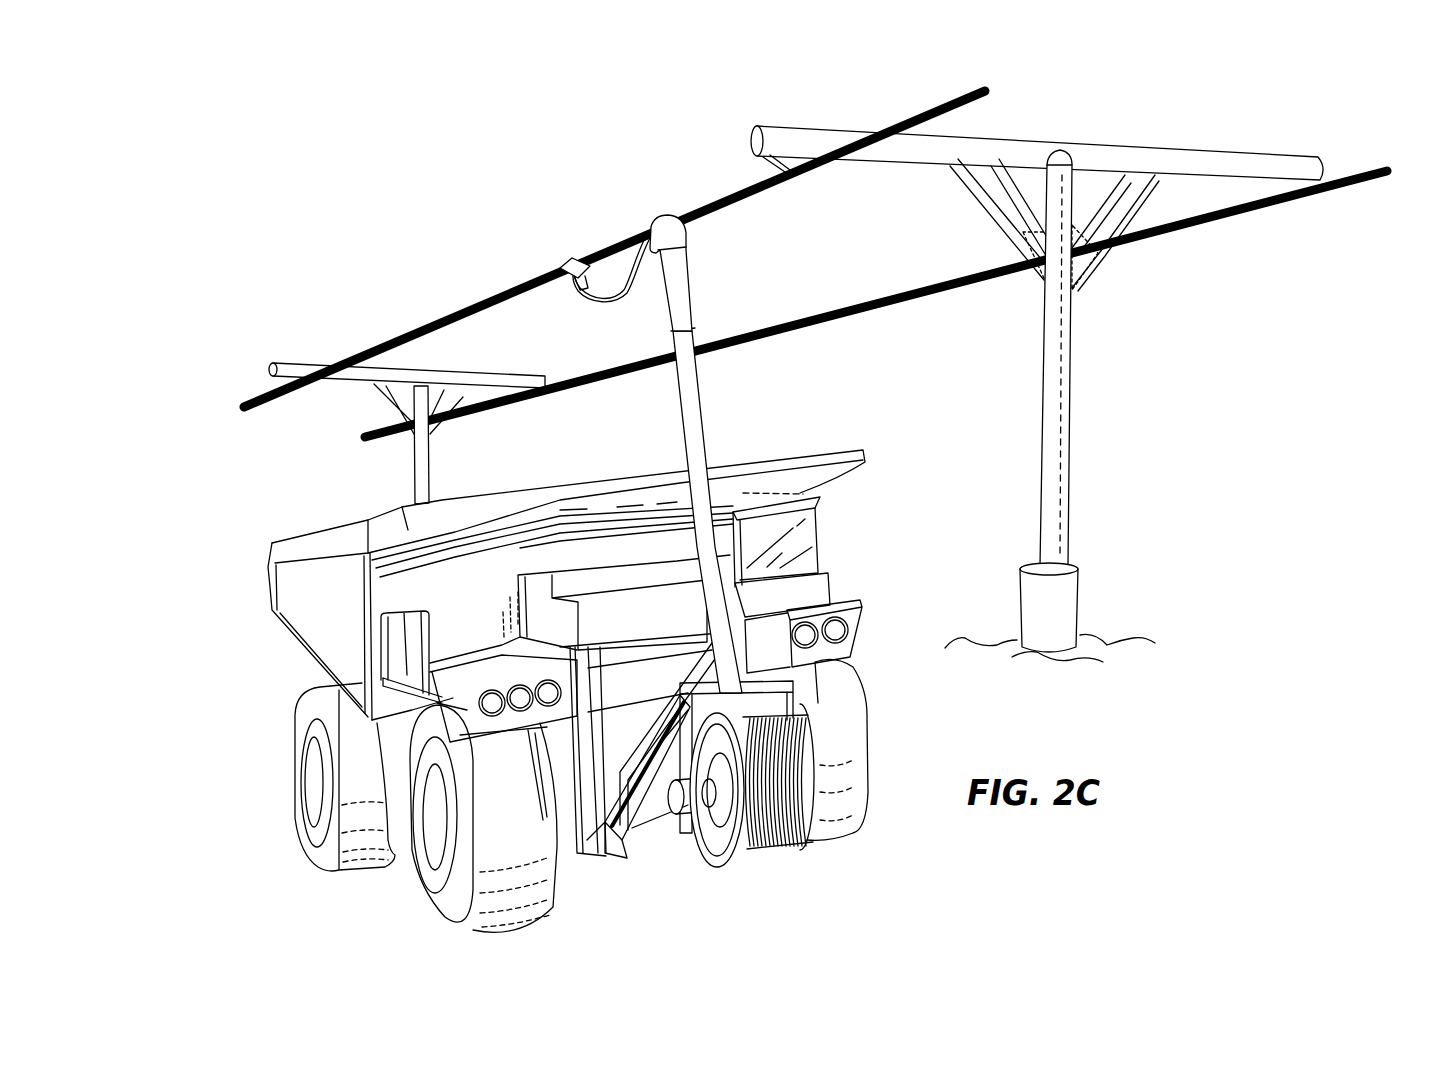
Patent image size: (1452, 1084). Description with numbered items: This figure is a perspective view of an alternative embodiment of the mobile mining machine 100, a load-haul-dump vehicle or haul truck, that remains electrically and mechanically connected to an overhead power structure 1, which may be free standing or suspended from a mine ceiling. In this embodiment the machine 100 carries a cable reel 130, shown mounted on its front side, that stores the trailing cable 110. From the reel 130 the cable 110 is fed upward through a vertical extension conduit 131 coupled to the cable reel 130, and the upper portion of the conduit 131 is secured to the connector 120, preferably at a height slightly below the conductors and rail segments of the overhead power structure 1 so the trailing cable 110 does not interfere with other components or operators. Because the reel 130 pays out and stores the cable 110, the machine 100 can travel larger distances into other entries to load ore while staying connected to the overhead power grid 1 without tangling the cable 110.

The overhead power structure 1 is at (508, 287).
The mobile mining machine 100 is at (268, 603).
The trailing cable 110 is at (602, 297).
The connector 120 is at (677, 254).
The cable reel 130 is at (710, 855).
The vertical extension conduit 131 is at (698, 428).